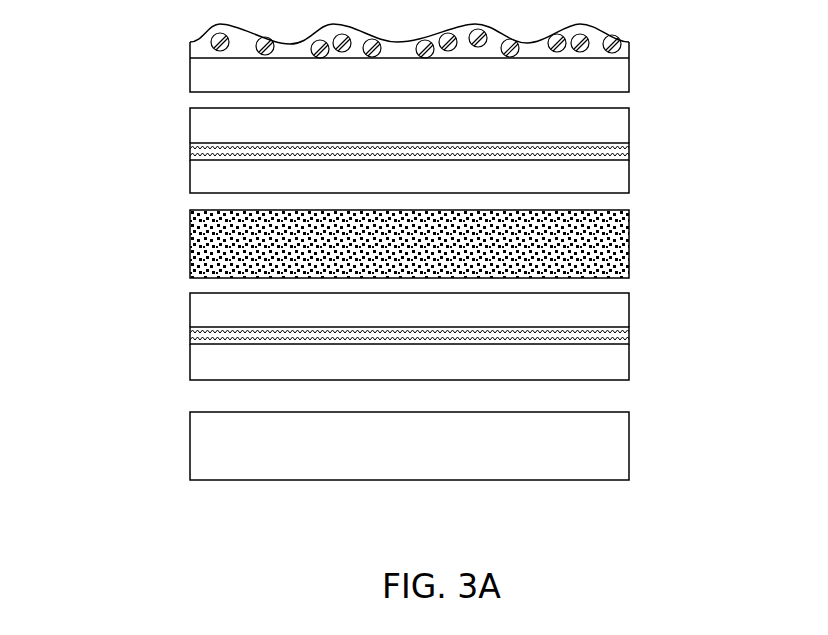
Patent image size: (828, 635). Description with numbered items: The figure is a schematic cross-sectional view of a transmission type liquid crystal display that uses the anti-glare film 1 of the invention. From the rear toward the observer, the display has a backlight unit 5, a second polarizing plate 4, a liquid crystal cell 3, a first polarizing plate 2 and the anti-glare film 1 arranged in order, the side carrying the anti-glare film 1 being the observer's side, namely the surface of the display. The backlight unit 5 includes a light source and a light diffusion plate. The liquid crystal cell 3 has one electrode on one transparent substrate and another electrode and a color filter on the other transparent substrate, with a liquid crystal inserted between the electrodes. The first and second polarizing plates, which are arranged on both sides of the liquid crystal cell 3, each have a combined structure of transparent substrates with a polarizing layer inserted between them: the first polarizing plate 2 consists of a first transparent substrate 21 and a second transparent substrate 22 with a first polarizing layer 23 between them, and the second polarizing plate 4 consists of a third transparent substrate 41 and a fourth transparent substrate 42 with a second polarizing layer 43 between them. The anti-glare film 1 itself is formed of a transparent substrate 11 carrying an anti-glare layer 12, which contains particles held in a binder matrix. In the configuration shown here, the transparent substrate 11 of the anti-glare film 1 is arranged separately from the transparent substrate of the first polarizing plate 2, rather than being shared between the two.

The anti-glare film 1 is at (397, 62).
The transparent substrate 11 is at (218, 70).
The anti-glare layer 12 is at (172, 25).
The first polarizing plate 2 is at (372, 158).
The first transparent substrate 21 is at (205, 125).
The second transparent substrate 22 is at (215, 184).
The first polarizing layer 23 is at (200, 147).
The liquid crystal cell 3 is at (608, 262).
The second polarizing plate 4 is at (376, 342).
The third transparent substrate 41 is at (210, 307).
The fourth transparent substrate 42 is at (220, 366).
The second polarizing layer 43 is at (200, 338).
The backlight unit 5 is at (608, 452).